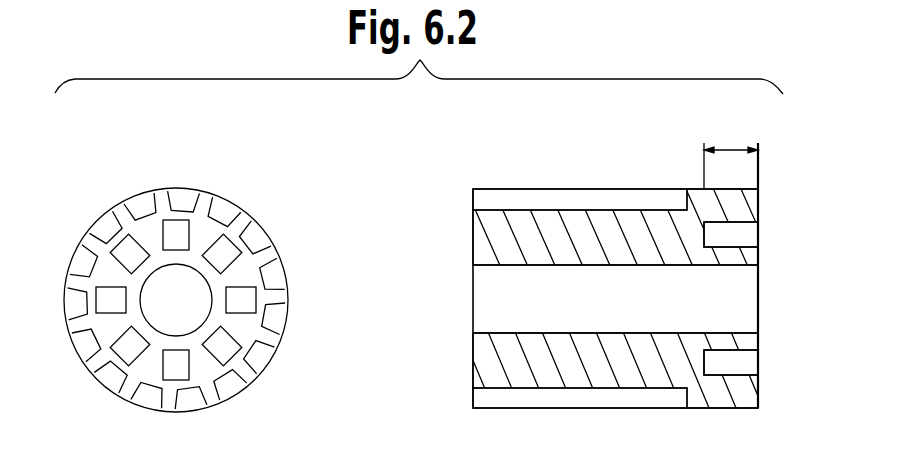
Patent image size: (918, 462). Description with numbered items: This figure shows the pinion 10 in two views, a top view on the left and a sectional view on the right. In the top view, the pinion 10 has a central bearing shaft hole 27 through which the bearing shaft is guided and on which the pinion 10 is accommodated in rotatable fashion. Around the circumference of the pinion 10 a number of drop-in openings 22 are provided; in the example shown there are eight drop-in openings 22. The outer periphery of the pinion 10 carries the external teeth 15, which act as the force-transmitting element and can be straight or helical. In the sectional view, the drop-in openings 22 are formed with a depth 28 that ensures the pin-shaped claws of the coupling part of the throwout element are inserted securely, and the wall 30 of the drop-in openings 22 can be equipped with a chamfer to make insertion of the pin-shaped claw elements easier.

The pinion 10 is at (278, 272).
The external teeth 15 is at (553, 200).
The drop-in openings 22 is at (137, 260).
The bearing shaft hole 27 is at (178, 303).
The depth 28 is at (733, 148).
The wall 30 is at (725, 392).